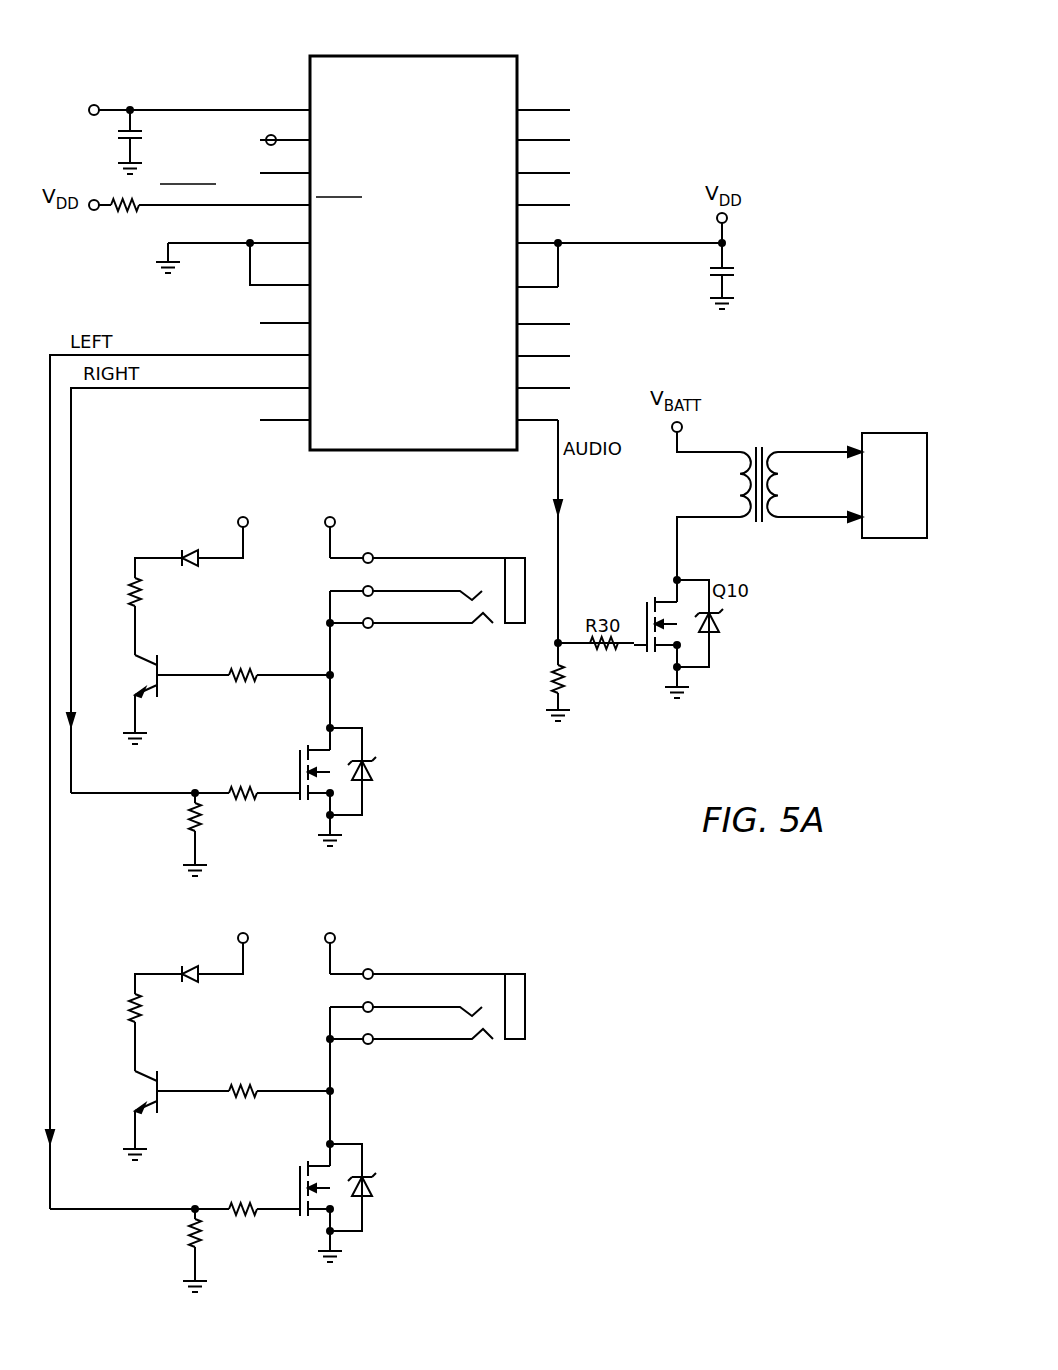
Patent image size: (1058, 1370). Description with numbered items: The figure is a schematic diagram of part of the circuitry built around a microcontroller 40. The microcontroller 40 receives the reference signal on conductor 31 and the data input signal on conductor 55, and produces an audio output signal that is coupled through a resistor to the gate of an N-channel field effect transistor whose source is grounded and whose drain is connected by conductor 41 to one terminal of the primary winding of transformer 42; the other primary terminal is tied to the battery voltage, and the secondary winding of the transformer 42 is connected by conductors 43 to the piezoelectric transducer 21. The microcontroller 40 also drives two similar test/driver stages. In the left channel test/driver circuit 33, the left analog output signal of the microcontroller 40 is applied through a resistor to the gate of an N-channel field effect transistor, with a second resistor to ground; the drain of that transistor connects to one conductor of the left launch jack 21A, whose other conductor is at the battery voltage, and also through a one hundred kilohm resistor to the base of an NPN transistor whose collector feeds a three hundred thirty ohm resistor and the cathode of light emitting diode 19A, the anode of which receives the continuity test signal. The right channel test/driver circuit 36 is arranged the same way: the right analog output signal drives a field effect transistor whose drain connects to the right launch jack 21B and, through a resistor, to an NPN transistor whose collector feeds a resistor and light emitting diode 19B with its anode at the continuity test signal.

The microcontroller 40 is at (413, 55).
The conductor 31 is at (212, 108).
The conductor 55 is at (270, 146).
The piezoelectric transducer 21 is at (902, 432).
The conductor 41 is at (677, 540).
The transformer 42 is at (762, 523).
The conductors 43 is at (820, 450).
The light emitting diode 19B is at (185, 563).
The right launch jack 21B is at (482, 626).
The right channel test/driver circuit 36 is at (466, 694).
The light emitting diode 19A is at (185, 979).
The left launch jack 21A is at (482, 1042).
The left channel test/driver circuit 33 is at (466, 1110).